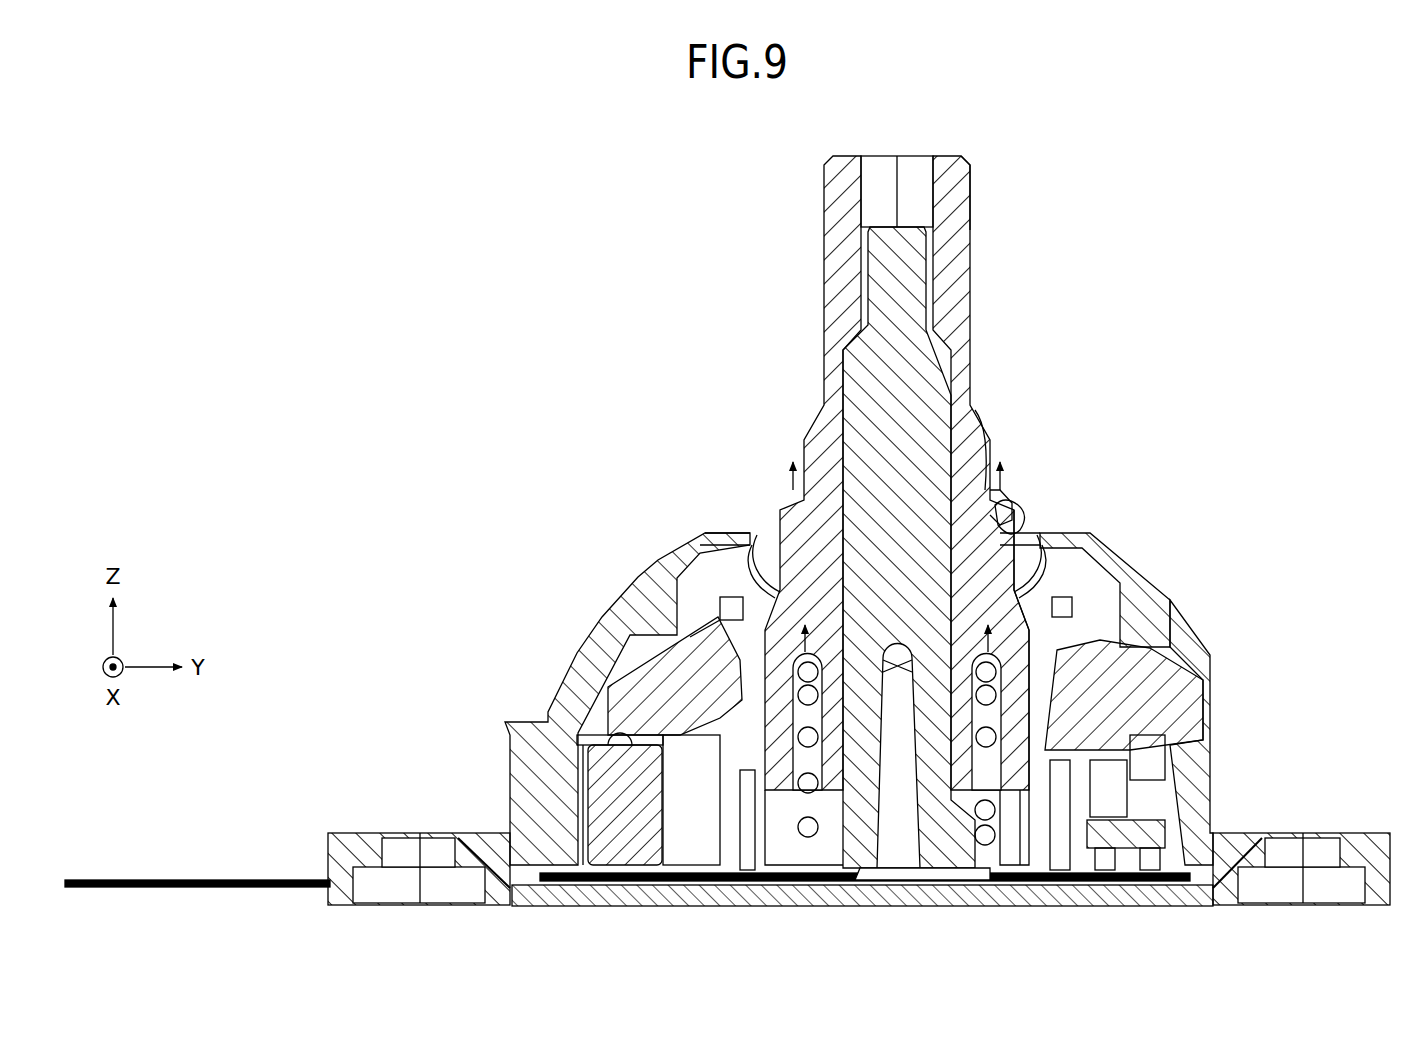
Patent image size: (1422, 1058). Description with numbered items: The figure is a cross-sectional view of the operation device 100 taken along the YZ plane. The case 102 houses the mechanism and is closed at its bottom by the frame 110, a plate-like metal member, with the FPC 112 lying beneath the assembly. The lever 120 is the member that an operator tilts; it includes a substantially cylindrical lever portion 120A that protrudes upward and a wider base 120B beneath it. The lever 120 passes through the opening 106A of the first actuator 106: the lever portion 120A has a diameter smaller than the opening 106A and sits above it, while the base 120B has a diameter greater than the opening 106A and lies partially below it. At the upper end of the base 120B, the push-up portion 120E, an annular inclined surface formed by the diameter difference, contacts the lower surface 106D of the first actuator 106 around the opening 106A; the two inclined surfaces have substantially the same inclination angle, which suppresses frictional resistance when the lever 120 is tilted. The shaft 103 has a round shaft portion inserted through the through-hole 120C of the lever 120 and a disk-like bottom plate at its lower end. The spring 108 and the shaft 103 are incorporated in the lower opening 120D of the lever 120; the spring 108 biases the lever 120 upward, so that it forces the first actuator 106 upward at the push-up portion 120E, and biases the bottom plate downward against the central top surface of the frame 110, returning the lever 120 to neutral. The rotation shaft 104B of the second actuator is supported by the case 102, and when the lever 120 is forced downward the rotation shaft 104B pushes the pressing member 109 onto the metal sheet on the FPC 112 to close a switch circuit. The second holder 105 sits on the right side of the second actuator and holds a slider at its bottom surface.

The operation device 100 is at (1362, 123).
The case 102 is at (688, 560).
The shaft 103 is at (915, 270).
The rotation shaft 104B is at (640, 700).
The second holder 105 is at (1152, 855).
The first actuator 106 is at (1042, 514).
The opening 106A is at (968, 468).
The lower surface 106D is at (1045, 505).
The spring 108 is at (805, 792).
The pressing member 109 is at (622, 865).
The frame 110 is at (545, 907).
The FPC 112 is at (203, 880).
The lever 120 is at (968, 158).
The lever portion 120A is at (975, 186).
The base 120B is at (1003, 565).
The through-hole 120C is at (882, 182).
The lower opening 120D is at (1030, 762).
The push-up portion 120E is at (1012, 505).